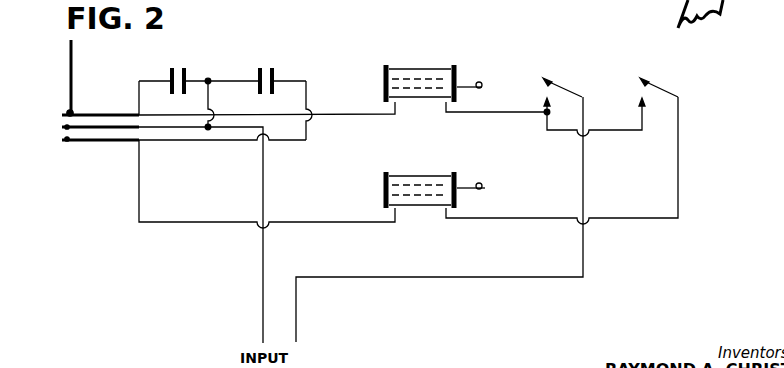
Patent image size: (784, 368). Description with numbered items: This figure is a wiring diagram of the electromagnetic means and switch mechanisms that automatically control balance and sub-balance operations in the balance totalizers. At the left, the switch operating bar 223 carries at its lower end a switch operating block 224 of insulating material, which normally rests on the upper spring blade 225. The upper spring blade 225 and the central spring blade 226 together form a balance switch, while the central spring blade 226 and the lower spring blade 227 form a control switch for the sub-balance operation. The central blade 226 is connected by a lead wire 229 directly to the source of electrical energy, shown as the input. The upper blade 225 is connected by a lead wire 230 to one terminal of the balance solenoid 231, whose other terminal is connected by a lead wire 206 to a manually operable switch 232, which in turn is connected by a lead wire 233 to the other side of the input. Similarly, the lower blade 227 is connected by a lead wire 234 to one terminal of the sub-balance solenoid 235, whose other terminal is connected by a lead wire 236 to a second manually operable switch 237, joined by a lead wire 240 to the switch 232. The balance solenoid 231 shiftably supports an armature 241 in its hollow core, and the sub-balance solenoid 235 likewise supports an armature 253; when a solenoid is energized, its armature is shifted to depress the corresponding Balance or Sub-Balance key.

The lead wire 206 is at (478, 112).
The switch operating bar 223 is at (73, 48).
The switch operating block 224 is at (69, 110).
The upper spring blade 225 is at (131, 112).
The central spring blade 226 is at (62, 127).
The lower spring blade 227 is at (80, 142).
The lead wire 229 is at (158, 133).
The lead wire 230 is at (320, 116).
The balance solenoid 231 is at (383, 83).
The manually operable switch 232 is at (545, 93).
The lead wire 233 is at (585, 173).
The lead wire 234 is at (220, 221).
The sub-balance solenoid 235 is at (383, 188).
The lead wire 236 is at (515, 218).
The manually operable switch 237 is at (640, 93).
The lead wire 240 is at (612, 130).
The armature 241 is at (466, 82).
The armature 253 is at (466, 190).